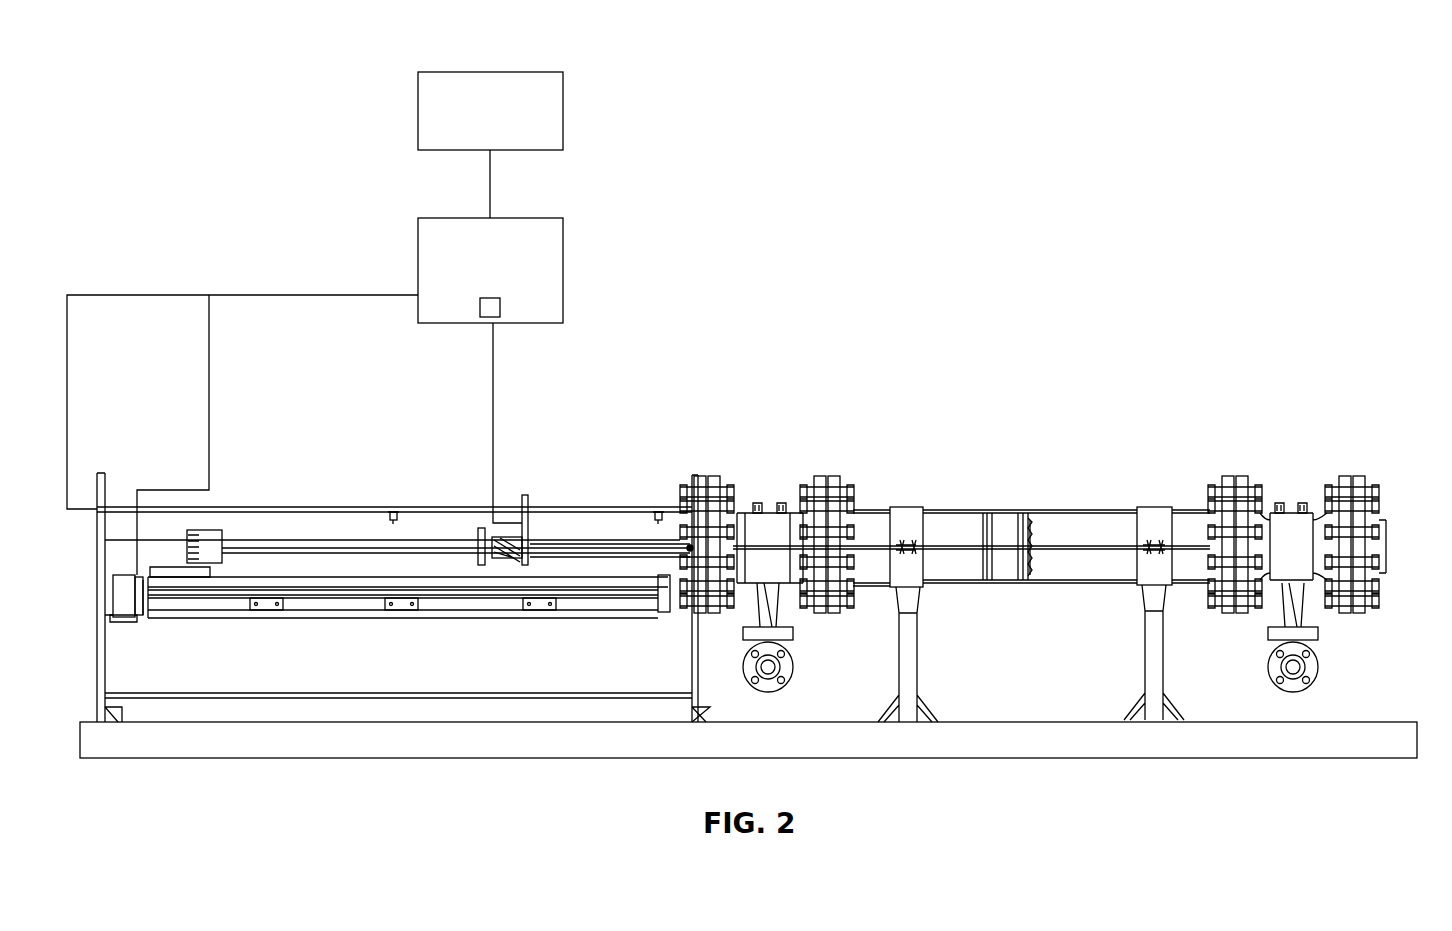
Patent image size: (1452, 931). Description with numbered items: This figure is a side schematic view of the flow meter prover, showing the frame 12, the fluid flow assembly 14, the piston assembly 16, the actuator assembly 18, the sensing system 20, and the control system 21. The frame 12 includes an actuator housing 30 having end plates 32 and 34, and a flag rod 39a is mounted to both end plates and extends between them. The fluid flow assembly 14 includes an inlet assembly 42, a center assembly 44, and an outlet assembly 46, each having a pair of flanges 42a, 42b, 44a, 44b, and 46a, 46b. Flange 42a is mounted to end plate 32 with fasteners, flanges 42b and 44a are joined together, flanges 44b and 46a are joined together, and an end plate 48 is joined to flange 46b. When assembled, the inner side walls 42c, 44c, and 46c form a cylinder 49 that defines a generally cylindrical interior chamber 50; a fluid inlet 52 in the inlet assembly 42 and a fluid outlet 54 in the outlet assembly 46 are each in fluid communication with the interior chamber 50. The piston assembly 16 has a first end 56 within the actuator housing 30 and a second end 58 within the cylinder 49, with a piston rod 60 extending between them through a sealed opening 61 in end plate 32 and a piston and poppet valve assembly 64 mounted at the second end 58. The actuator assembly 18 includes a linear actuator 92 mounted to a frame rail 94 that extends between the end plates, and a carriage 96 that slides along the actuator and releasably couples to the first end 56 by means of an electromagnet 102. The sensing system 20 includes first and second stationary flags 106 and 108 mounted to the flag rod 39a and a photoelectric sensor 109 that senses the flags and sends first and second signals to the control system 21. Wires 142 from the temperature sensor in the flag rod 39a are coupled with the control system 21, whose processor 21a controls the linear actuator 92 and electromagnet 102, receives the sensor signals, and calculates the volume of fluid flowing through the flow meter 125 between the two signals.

The frame 12 is at (1112, 745).
The fluid flow assembly 14 is at (1190, 415).
The piston assembly 16 is at (555, 548).
The actuator assembly 18 is at (272, 580).
The sensing system 20 is at (438, 482).
The control system 21 is at (478, 218).
The processor 21a is at (500, 307).
The actuator housing 30 is at (205, 662).
The end plate 32 is at (700, 690).
The end plate 34 is at (97, 478).
The flag rod 39a is at (118, 507).
The inlet assembly 42 is at (792, 478).
The flange 42a is at (712, 485).
The flange 42b is at (822, 485).
The inner side wall 42c is at (766, 488).
The center assembly 44 is at (940, 495).
The flange 44a is at (835, 485).
The flange 44b is at (1228, 485).
The inner side wall 44c is at (1063, 510).
The outlet assembly 46 is at (1323, 415).
The flange 46a is at (1242, 485).
The flange 46b is at (1350, 485).
The inner side wall 46c is at (1313, 488).
The end plate 48 is at (1370, 520).
The cylinder 49 is at (1145, 510).
The interior chamber 50 is at (958, 565).
The fluid inlet 52 is at (772, 590).
The fluid outlet 54 is at (1295, 590).
The first end 56 is at (482, 530).
The second end 58 is at (1028, 583).
The piston rod 60 is at (597, 540).
The sealed opening 61 is at (680, 548).
The piston and poppet valve assembly 64 is at (1026, 495).
The linear actuator 92 is at (220, 600).
The frame rail 94 is at (449, 620).
The carriage 96 is at (193, 547).
The electromagnet 102 is at (215, 545).
The first stationary flag 106 is at (393, 510).
The second stationary flag 108 is at (658, 510).
The photoelectric sensor 109 is at (527, 495).
The flow meter 125 is at (487, 72).
The wires 142 is at (140, 294).